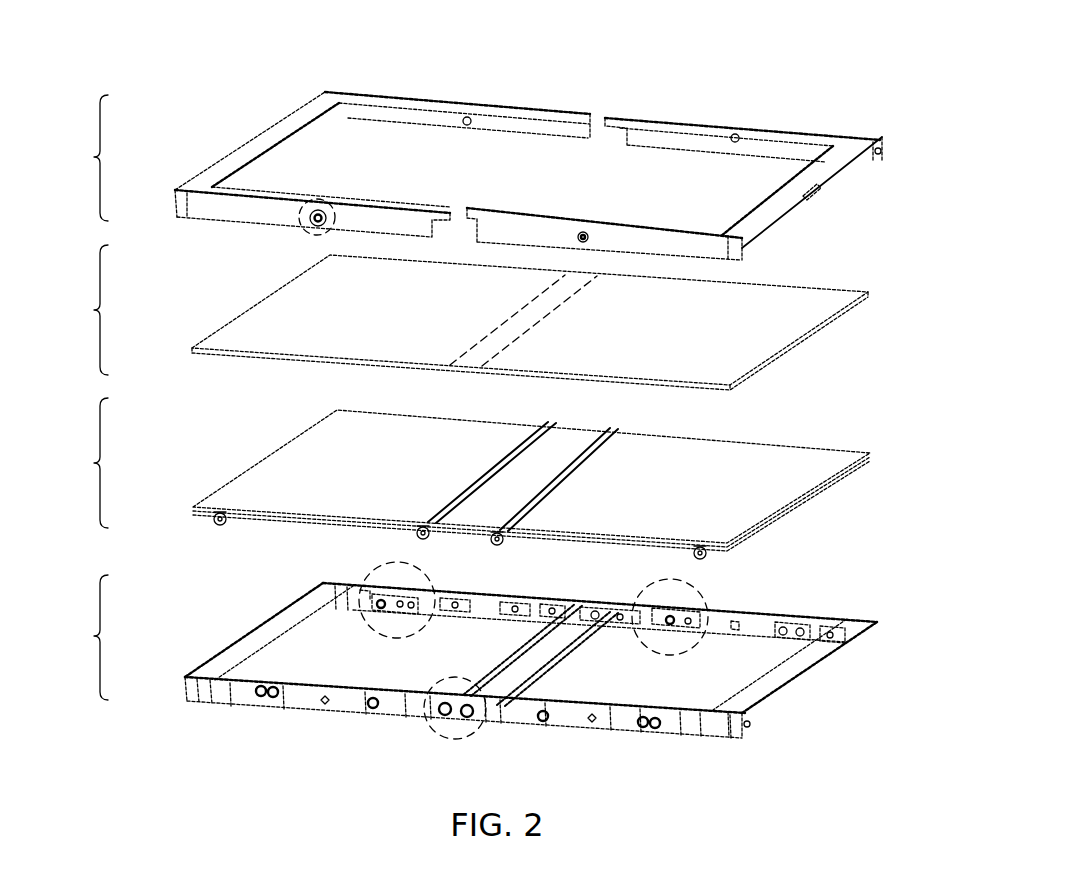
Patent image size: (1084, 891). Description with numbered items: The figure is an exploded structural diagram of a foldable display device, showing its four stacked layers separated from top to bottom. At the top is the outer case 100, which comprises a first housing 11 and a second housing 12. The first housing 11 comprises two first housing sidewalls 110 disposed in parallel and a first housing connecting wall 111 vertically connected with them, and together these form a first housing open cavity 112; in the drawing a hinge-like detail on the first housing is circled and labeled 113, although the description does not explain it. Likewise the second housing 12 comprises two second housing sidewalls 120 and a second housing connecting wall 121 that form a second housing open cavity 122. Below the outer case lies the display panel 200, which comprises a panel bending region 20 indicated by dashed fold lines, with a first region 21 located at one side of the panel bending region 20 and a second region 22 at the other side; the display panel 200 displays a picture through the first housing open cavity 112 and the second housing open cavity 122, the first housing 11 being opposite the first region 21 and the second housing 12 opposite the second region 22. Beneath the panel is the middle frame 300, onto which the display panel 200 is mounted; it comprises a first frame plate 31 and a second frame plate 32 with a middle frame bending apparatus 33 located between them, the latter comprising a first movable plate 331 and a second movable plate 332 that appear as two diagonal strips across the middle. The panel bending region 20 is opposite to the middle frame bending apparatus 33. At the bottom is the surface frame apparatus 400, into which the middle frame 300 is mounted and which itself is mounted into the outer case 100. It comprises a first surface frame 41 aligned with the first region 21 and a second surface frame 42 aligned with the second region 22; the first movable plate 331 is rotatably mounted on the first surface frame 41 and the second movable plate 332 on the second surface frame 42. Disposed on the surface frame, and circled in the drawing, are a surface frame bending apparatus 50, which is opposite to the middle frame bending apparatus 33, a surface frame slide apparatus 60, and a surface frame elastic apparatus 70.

The outer case 100 is at (499, 150).
The first housing 11 is at (361, 138).
The first housing sidewalls 110 is at (447, 118).
The first housing connecting wall 111 is at (255, 138).
The first housing open cavity 112 is at (362, 160).
The first frame hinge 113 is at (320, 193).
The second housing 12 is at (709, 160).
The second housing sidewalls 120 is at (700, 142).
The second housing connecting wall 121 is at (840, 155).
The second housing open cavity 122 is at (700, 203).
The display panel 200 is at (472, 326).
The panel bending region 20 is at (512, 331).
The first region 21 is at (308, 318).
The second region 22 is at (715, 350).
The middle frame 300 is at (472, 486).
The first frame plate 31 is at (308, 475).
The second frame plate 32 is at (713, 522).
The first movable plate 331 is at (528, 468).
The second movable plate 332 is at (600, 447).
The middle frame bending apparatus 33 is at (483, 540).
The surface frame apparatus 400 is at (488, 660).
The first surface frame 41 is at (308, 643).
The second surface frame 42 is at (740, 683).
The surface frame bending apparatus 50 is at (480, 735).
The surface frame slide apparatus 60 is at (696, 586).
The surface frame elastic apparatus 70 is at (370, 578).